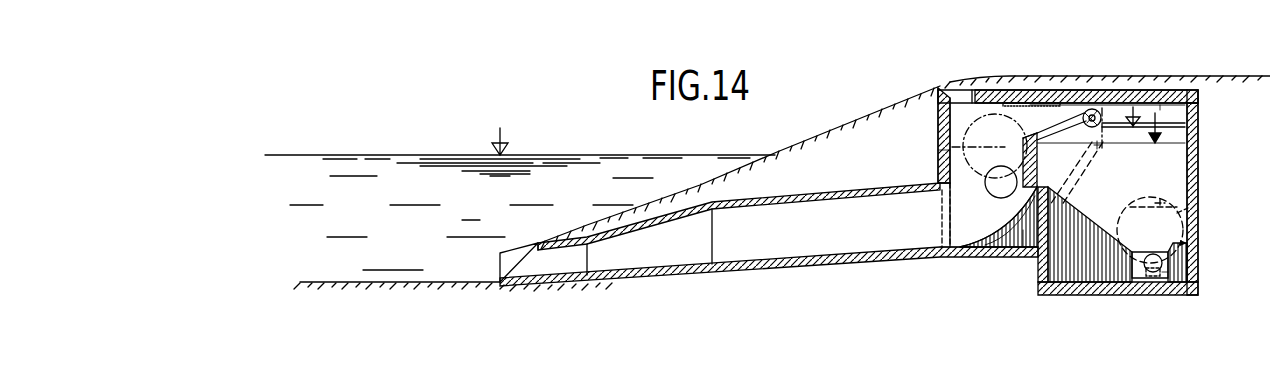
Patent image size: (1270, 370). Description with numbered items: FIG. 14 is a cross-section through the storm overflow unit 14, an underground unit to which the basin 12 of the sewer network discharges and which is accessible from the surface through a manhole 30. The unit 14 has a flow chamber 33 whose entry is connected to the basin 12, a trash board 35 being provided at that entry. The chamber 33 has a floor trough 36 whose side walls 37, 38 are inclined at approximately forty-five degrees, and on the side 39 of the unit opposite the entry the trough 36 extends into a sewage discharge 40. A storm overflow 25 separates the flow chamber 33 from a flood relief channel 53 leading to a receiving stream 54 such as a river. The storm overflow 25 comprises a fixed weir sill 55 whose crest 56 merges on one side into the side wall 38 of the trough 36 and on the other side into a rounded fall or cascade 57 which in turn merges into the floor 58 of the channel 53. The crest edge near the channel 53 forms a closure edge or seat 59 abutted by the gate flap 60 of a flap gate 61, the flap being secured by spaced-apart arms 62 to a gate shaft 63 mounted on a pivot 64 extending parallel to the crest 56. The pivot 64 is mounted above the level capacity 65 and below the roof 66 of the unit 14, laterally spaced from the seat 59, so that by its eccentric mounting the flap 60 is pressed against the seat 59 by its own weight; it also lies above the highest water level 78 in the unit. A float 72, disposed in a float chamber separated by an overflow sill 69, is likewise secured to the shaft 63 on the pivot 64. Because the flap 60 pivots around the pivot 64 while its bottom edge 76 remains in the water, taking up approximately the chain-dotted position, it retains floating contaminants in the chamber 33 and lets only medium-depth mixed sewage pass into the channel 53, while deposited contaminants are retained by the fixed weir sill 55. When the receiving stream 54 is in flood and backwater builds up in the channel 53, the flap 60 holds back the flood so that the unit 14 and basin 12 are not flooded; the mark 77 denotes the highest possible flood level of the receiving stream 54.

The basin 12 is at (1172, 218).
The storm overflow unit 14 is at (968, 64).
The storm overflow 25 is at (958, 262).
The manhole 30 is at (1032, 92).
The flow chamber 33 is at (1165, 181).
The trash board 35 is at (1170, 193).
The floor trough 36 is at (1170, 278).
The side wall 37 is at (1170, 244).
The side wall 38 is at (1088, 218).
The side of the overflow unit 39 is at (1193, 134).
The sewage discharge 40 is at (1146, 277).
The flood relief channel 53 is at (785, 241).
The receiving stream 54 is at (413, 247).
The fixed weir sill 55 is at (1055, 215).
The crest 56 is at (1038, 190).
The rounded fall or cascade 57 is at (1003, 253).
The floor 58 is at (910, 245).
The closure edge or seat 59 is at (1021, 252).
The gate flap 60 is at (1005, 152).
The flap gate 61 is at (1034, 124).
The arms 62 is at (1057, 124).
The gate shaft 63 is at (1128, 93).
The pivot 64 is at (1093, 109).
The level capacity 65 is at (1160, 118).
The roof 66 is at (1133, 112).
The overflow sill 69 is at (1097, 144).
The float 72 is at (975, 223).
The bottom edge 76 is at (978, 255).
The highest possible flood level 77 is at (502, 134).
The highest water level 78 is at (1160, 105).